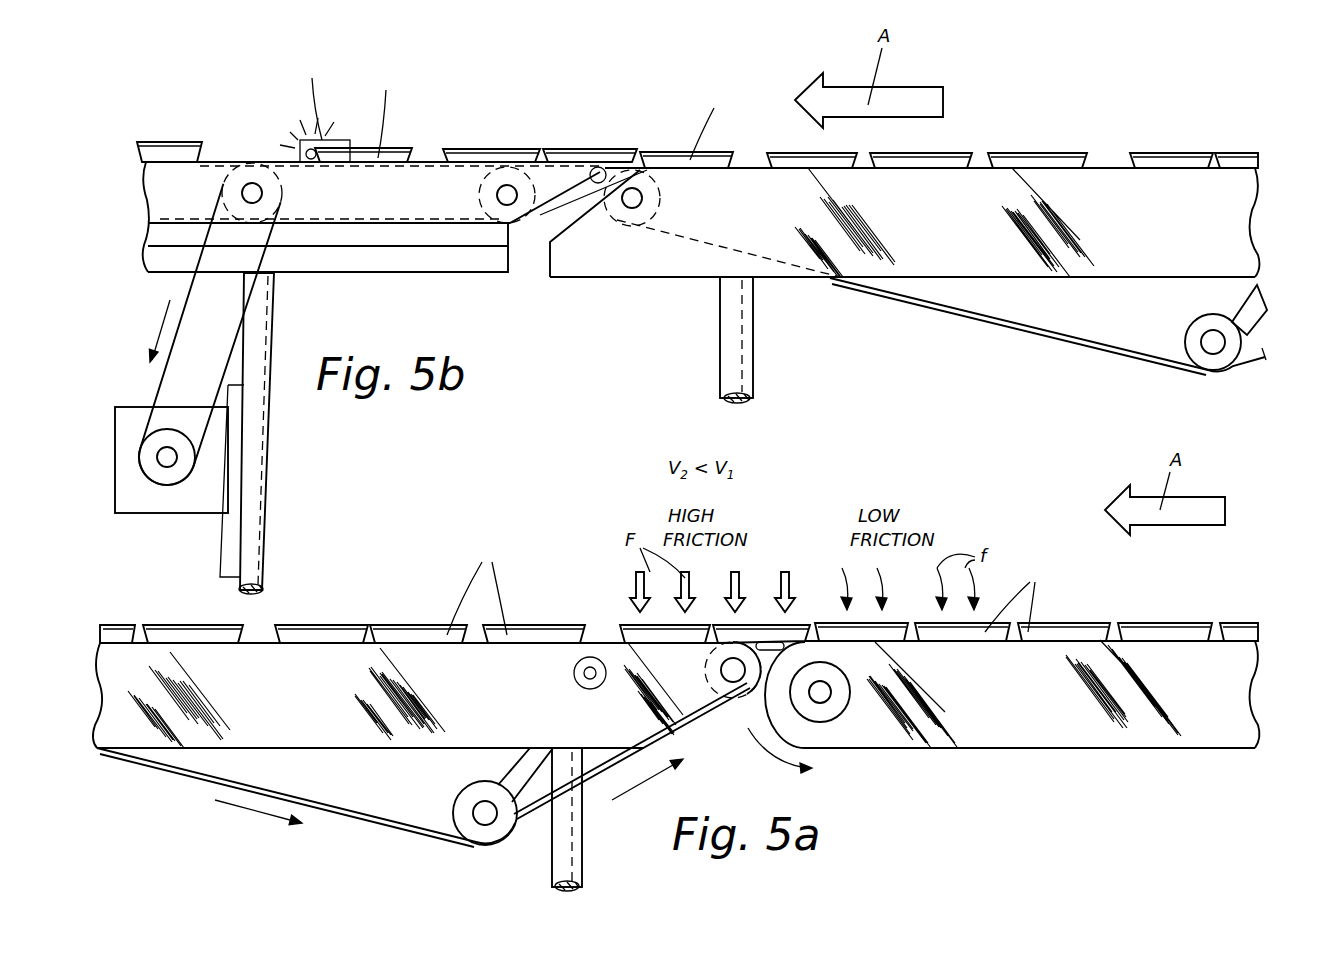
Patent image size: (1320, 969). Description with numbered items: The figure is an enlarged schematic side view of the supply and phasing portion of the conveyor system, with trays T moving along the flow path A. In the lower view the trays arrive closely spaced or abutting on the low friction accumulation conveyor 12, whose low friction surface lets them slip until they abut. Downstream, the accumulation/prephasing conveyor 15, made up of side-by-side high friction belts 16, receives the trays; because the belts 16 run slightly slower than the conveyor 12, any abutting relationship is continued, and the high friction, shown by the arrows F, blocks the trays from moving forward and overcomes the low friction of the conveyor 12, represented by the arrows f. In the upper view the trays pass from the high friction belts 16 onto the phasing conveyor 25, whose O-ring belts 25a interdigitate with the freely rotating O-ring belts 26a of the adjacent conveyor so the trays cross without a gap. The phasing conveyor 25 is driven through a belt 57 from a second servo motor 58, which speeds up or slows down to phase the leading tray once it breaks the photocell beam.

In FIG. 5A, the low friction accumulation conveyor 12 is at (998, 727).
In FIG. 5B, the accumulation/prephasing conveyor 15 is at (1106, 141).
In FIG. 5A, the accumulation/prephasing conveyor 15 is at (397, 600).
In FIG. 5B, the high friction belts 16 is at (970, 318).
In FIG. 5A, the high friction belts 16 is at (357, 812).
In FIG. 5B, the phasing conveyor 25 is at (427, 125).
In FIG. 5B, the O-ring belts 25a is at (412, 212).
In FIG. 5B, the O-ring belts 26a is at (165, 168).
In FIG. 5B, the belt 57 is at (190, 295).
In FIG. 5B, the second servo motor 58 is at (125, 466).